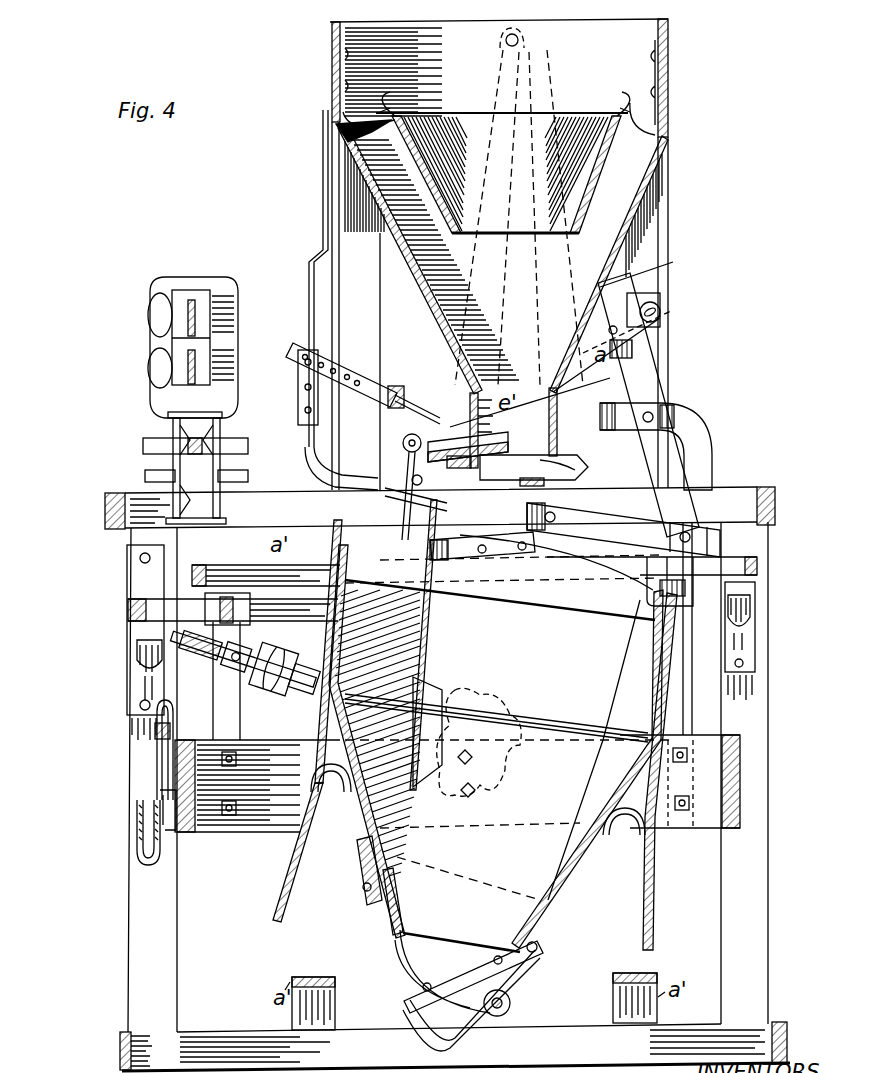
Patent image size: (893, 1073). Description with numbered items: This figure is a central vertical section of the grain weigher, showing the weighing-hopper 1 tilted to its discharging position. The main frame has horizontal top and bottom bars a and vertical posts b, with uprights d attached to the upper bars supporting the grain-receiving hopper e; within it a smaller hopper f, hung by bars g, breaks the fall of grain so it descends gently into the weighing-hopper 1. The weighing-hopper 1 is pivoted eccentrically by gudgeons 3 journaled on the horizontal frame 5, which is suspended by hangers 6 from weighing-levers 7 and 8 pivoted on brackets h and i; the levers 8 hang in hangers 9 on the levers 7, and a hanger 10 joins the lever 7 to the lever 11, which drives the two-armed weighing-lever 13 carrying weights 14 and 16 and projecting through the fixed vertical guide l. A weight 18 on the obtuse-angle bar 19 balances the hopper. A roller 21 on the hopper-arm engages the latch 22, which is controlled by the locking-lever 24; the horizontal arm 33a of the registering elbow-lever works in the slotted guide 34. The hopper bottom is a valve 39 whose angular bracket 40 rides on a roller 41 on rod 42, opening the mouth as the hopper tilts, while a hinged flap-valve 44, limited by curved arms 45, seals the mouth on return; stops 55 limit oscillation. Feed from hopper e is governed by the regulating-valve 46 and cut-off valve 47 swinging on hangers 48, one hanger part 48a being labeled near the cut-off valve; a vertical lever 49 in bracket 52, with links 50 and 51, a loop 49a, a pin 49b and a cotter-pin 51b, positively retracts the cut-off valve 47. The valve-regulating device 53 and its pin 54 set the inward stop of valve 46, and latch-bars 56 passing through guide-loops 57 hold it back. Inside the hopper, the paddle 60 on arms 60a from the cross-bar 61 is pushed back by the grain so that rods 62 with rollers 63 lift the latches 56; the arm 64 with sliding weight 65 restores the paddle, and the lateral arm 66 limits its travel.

The weighing-hopper 1 is at (553, 900).
The lateral pivots or gudgeons 3 is at (470, 706).
The rectangular horizontal frame 5 is at (270, 830).
The hangers 6 is at (228, 700).
The weighing-levers 7 is at (300, 576).
The weighing-levers 8 is at (320, 608).
The hangers 9 is at (308, 275).
The hanger 10 is at (222, 424).
The lever 11 is at (150, 442).
The two-armed weighing-lever 13 is at (207, 305).
The weight 14 is at (180, 318).
The weight 16 is at (182, 378).
The weight 18 is at (258, 692).
The obtuse-angle bar 19 is at (287, 697).
The antifriction-roller 21 is at (191, 665).
The latch 22 is at (174, 702).
The locking-lever 24 is at (155, 731).
The horizontal arm of the elbow-lever 33a is at (158, 796).
The slotted guide 34 is at (143, 863).
The valve 39 is at (450, 985).
The angular bracket 40 is at (447, 1040).
The roller 41 is at (536, 983).
The rod 42 is at (511, 1004).
The flap-valve 44 is at (373, 910).
The curved arms 45 is at (366, 905).
The regulating-valve 46 is at (468, 437).
The cut-off valve 47 is at (534, 461).
The hangers 48 is at (469, 426).
The stop 48a is at (548, 478).
The lever 49 is at (690, 452).
The slot or loop 49a is at (630, 290).
The pin 49b is at (640, 343).
The link 50 is at (623, 530).
The link 51 is at (688, 326).
The cotter-pin 51b is at (661, 312).
The bracket 52 is at (690, 405).
The valve-regulating device 53 is at (345, 375).
The pin 54 is at (297, 375).
The stops 55 is at (665, 897).
The latch-bars 56 is at (392, 384).
The guide-loops 57 is at (380, 428).
The plate or paddle 60 is at (462, 795).
The arms 60a is at (440, 660).
The cross-bar 61 is at (430, 566).
The screw-threaded rods 62 is at (405, 428).
The antifriction-rollers 63 is at (422, 495).
The arm 64 is at (448, 506).
The sliding weight 65 is at (395, 480).
The rigid lateral arm 66 is at (350, 518).
The horizontal top and bottom bars a is at (776, 500).
The vertical bars or posts b is at (180, 930).
The vertical bars or uprights d is at (688, 248).
The grain-receiving hopper e is at (502, 253).
The smaller hopper f is at (502, 173).
The bars g is at (398, 118).
The bracket h is at (752, 603).
The bracket i is at (140, 655).
The fixed vertical guide l is at (187, 335).